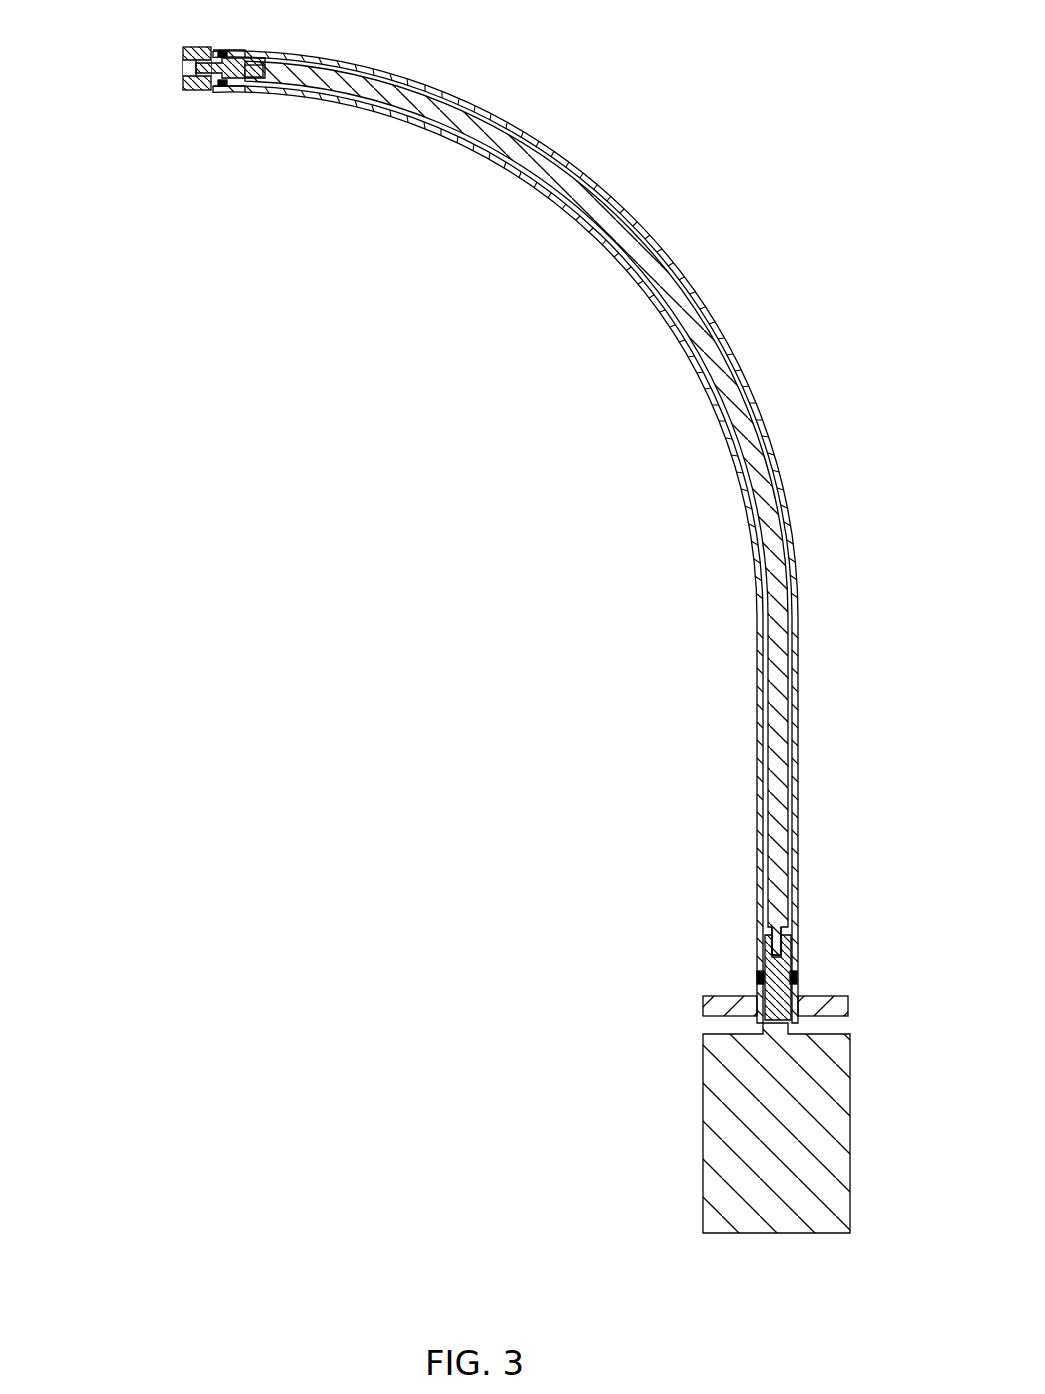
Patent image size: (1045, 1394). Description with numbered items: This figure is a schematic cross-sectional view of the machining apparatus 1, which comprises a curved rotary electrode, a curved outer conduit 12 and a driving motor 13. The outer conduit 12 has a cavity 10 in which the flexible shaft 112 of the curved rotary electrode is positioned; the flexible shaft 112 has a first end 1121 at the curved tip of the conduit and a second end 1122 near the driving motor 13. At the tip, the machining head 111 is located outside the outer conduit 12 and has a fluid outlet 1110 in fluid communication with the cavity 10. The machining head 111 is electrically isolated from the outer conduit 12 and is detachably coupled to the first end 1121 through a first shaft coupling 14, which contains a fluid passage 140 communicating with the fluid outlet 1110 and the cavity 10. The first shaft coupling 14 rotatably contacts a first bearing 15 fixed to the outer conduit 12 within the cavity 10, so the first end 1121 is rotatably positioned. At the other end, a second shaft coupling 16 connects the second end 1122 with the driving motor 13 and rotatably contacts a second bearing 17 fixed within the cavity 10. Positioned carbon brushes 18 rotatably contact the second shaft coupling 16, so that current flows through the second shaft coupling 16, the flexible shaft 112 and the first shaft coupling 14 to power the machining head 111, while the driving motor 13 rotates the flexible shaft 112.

The machining apparatus 1 is at (488, 620).
The cavity 10 is at (541, 515).
The outer conduit 12 is at (392, 72).
The flexible shaft 112 is at (557, 498).
The first end 1121 is at (257, 80).
The second end 1122 is at (770, 940).
The machining head 111 is at (135, 56).
The fluid outlet 1110 is at (198, 47).
The first shaft coupling 14 is at (245, 65).
The first bearing 15 is at (225, 52).
The fluid passage 140 is at (222, 87).
The second shaft coupling 16 is at (790, 968).
The second bearing 17 is at (798, 987).
The carbon brushes 18 is at (848, 1010).
The driving motor 13 is at (833, 1128).